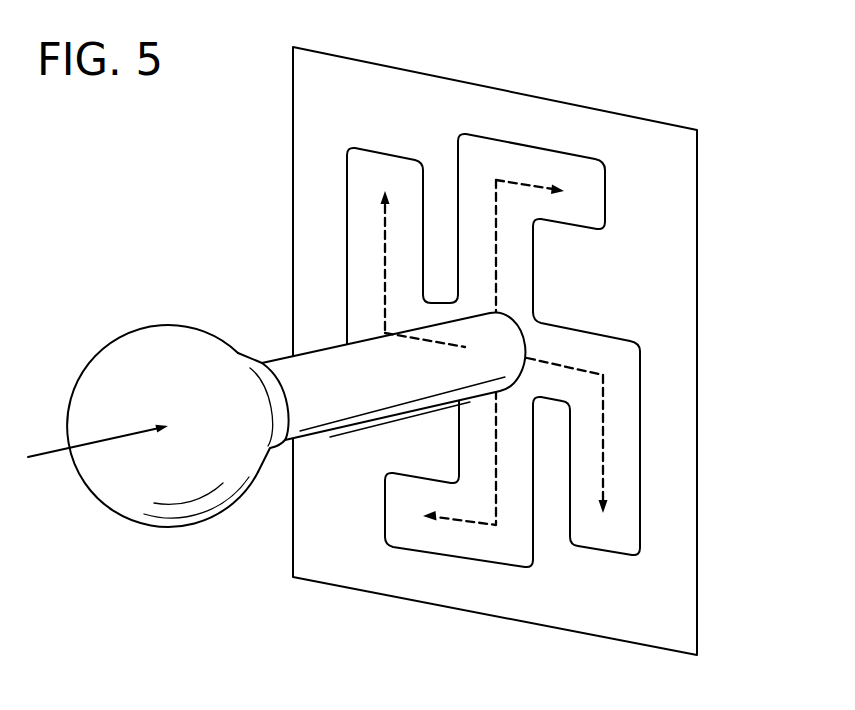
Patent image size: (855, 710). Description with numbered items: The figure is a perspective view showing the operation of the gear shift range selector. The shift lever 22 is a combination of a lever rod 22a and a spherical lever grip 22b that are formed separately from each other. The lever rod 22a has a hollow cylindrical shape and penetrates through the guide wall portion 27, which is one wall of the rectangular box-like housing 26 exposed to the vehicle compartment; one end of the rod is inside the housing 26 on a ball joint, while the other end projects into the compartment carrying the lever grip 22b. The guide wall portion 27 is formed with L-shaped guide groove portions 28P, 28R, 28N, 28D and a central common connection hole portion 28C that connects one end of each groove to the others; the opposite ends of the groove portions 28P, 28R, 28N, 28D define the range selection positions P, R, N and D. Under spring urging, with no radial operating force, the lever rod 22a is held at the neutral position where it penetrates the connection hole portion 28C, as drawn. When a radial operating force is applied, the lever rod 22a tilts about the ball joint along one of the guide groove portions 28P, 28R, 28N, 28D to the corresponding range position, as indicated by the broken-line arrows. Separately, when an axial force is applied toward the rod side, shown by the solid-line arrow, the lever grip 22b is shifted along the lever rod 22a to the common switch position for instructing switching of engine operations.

The shift lever 22 is at (276, 372).
The lever rod 22a is at (261, 369).
The lever grip 22b is at (170, 338).
The housing 26 is at (673, 168).
The guide wall portion 27 is at (543, 351).
The guide groove portion 28P is at (424, 186).
The guide groove portion 28R is at (566, 153).
The central common connection hole portion 28C is at (530, 345).
The guide groove portion 28N is at (638, 461).
The guide groove portion 28D is at (505, 563).